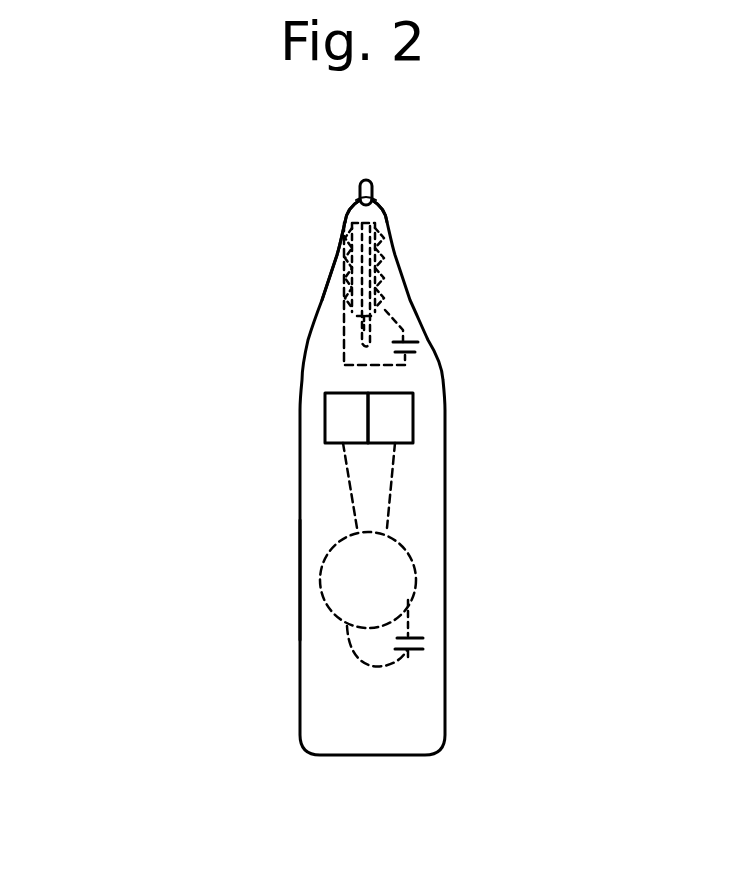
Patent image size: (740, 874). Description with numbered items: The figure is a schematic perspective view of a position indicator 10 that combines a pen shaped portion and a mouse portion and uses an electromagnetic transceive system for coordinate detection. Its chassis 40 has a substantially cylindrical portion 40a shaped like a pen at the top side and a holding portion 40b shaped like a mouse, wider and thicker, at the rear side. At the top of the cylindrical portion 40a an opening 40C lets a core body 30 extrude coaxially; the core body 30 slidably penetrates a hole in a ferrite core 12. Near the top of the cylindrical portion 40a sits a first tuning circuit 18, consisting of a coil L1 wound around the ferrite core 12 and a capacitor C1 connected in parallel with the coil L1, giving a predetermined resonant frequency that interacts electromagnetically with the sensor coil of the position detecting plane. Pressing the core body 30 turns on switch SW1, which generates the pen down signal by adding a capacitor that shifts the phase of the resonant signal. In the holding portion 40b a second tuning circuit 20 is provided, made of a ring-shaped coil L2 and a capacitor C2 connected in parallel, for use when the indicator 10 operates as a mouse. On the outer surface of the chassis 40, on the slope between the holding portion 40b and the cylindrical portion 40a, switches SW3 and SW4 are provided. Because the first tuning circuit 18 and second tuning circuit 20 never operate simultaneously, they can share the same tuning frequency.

The position indicator 10 is at (176, 316).
The ferrite core 12 is at (381, 226).
The first tuning circuit 18 is at (522, 187).
The second tuning circuit 20 is at (545, 666).
The core body 30 is at (378, 188).
The chassis 40 is at (445, 493).
The substantially cylindrical portion 40a is at (336, 255).
The holding portion 40b is at (302, 578).
The opening 40C is at (372, 198).
The switch SW1 is at (358, 198).
The switch SW3 is at (325, 415).
The switch SW4 is at (413, 415).
The coil L1 is at (390, 256).
The capacitor C1 is at (405, 348).
The coil L2 is at (417, 583).
The capacitor C2 is at (423, 643).